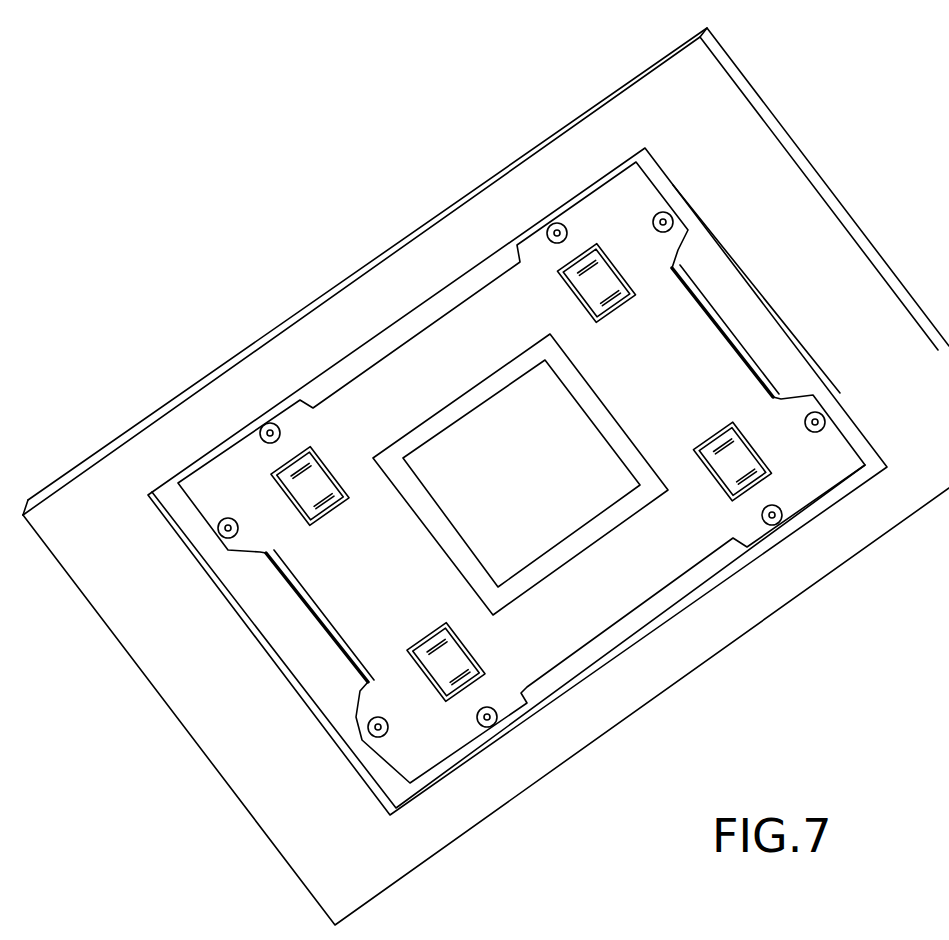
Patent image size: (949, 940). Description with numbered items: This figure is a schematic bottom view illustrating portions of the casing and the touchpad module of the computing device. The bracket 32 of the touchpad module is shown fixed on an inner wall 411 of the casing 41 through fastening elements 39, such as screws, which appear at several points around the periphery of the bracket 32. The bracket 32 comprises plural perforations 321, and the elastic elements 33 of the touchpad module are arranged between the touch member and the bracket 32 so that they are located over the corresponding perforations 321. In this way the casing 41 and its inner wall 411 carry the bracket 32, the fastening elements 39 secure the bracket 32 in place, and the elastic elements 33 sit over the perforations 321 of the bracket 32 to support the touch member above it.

The casing 41 is at (620, 114).
The inner wall 411 is at (755, 325).
The bracket 32 is at (404, 359).
The fastening elements 39 is at (551, 224).
The elastic elements 33 is at (592, 279).
The perforations 321 is at (640, 296).